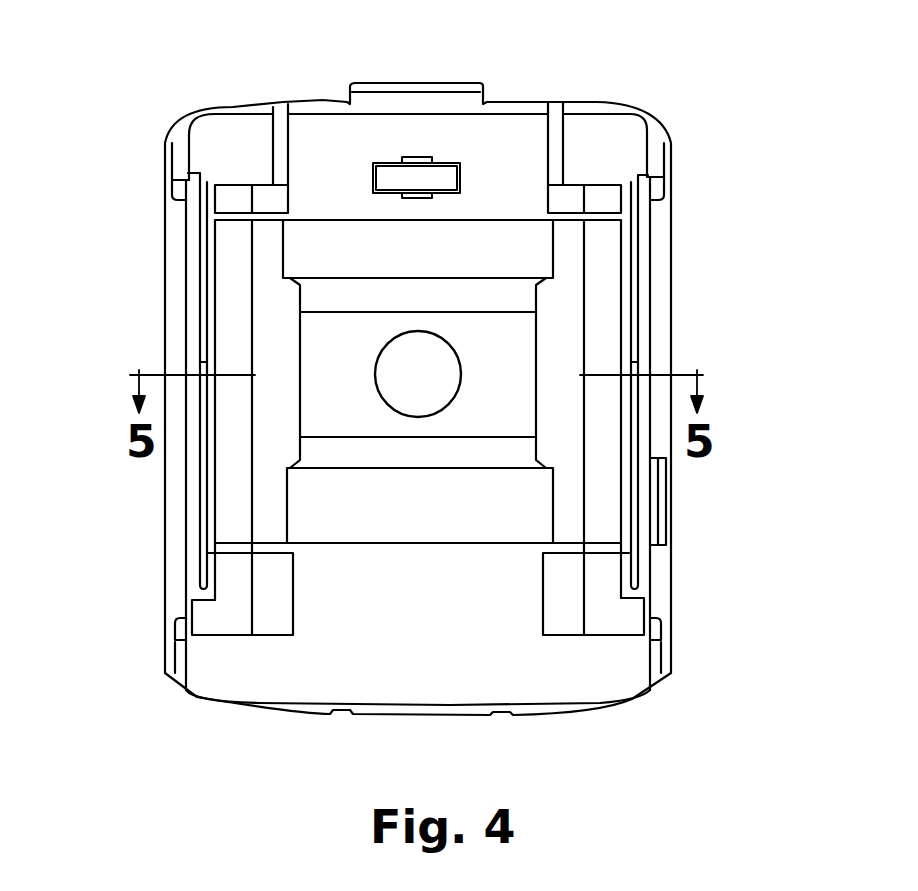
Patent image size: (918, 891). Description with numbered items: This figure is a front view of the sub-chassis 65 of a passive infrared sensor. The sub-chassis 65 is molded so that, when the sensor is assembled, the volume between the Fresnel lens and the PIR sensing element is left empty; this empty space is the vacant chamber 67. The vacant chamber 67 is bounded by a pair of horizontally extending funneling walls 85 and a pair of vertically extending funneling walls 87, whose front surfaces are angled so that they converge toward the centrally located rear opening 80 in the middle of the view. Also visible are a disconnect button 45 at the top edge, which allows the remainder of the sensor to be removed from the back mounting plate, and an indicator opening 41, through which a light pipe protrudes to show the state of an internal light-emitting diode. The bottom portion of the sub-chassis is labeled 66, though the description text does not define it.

The indicator opening 41 is at (448, 170).
The disconnect button 45 is at (446, 96).
The sub-chassis 65 is at (668, 93).
The bottom wall 66 is at (485, 678).
The vacant chamber 67 is at (497, 503).
The rear opening 80 is at (390, 350).
The horizontally extending funneling walls 85 is at (517, 296).
The vertically extending funneling walls 87 is at (270, 457).